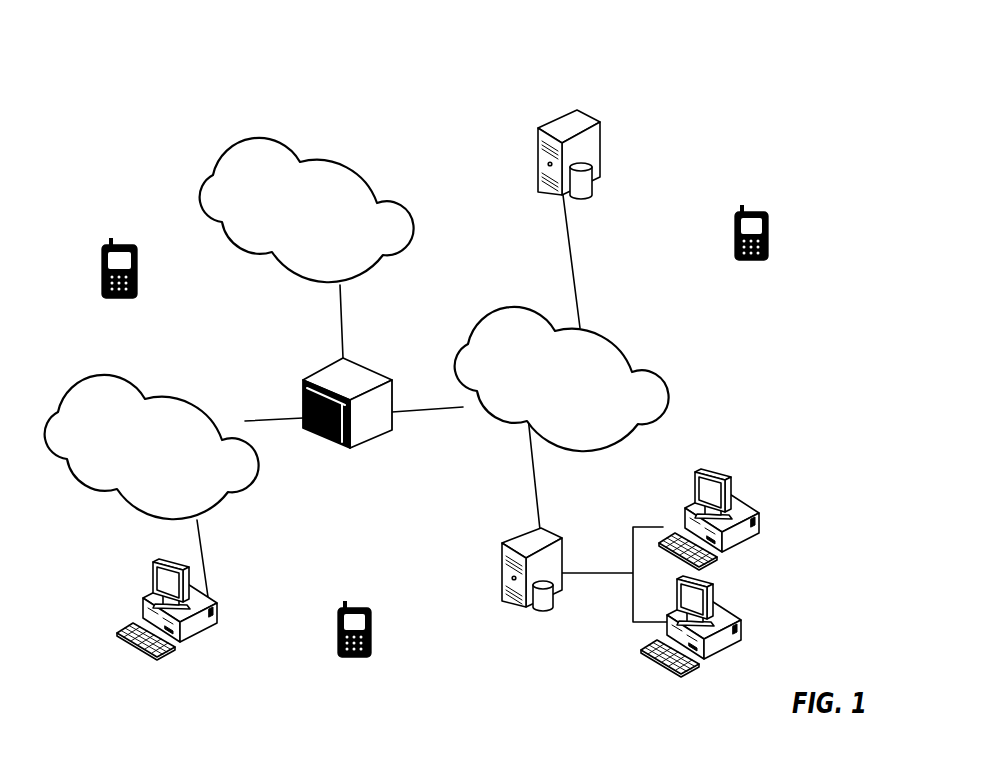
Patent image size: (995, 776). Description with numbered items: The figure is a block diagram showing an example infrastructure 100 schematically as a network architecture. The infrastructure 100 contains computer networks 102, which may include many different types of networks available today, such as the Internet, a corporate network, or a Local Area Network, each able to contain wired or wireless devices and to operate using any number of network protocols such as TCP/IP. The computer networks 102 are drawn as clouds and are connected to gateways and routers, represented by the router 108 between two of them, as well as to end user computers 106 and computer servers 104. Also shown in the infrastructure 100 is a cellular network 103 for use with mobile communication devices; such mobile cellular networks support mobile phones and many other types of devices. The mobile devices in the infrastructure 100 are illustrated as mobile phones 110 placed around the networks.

The infrastructure 100 is at (688, 64).
The computer networks 102 is at (627, 353).
The cellular network 103 is at (335, 162).
The computer servers 104 is at (540, 143).
The end user computers 106 is at (214, 603).
The gateways and routers 108 is at (363, 365).
The mobile phones 110 is at (130, 243).